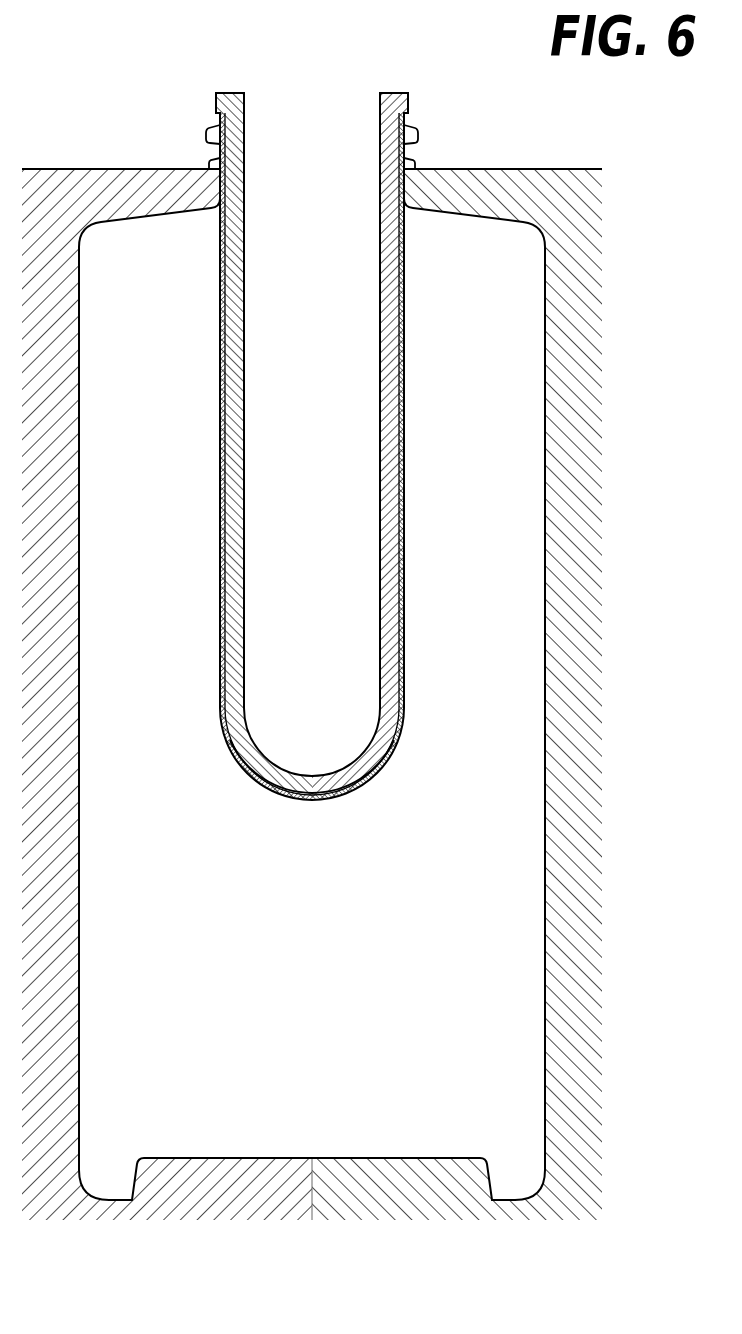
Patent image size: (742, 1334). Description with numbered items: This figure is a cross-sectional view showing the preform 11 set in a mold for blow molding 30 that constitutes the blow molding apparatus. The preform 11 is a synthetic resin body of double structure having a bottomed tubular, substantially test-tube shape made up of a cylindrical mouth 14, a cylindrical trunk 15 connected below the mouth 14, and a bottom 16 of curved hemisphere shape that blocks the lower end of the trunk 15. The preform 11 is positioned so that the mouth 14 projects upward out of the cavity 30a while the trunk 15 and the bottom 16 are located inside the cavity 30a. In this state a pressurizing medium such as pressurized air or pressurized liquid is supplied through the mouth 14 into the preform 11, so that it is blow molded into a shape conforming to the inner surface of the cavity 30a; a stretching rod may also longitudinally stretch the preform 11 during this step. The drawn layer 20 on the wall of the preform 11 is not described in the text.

The preform 11 is at (324, 440).
The mouth 14 is at (415, 147).
The trunk 15 is at (414, 404).
The bottom 16 is at (327, 806).
The outer layer 20 is at (217, 487).
The mold for blow molding 30 is at (350, 694).
The cavity 30a is at (545, 746).